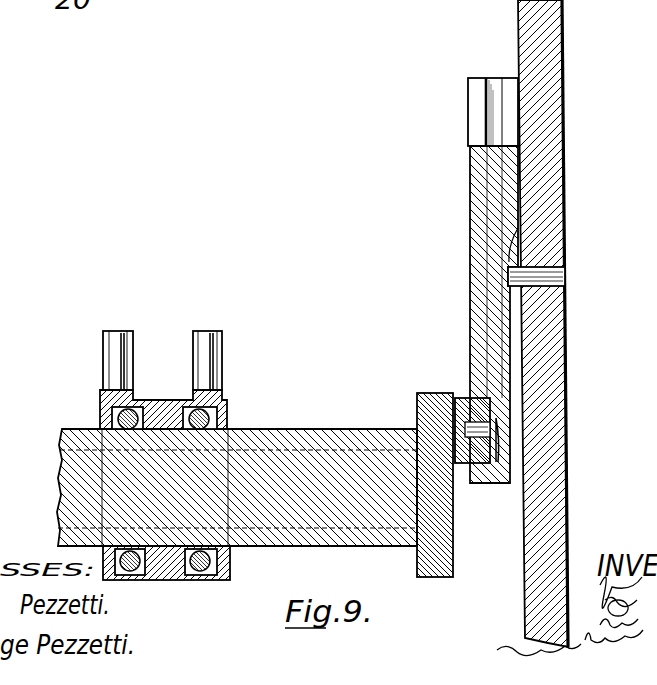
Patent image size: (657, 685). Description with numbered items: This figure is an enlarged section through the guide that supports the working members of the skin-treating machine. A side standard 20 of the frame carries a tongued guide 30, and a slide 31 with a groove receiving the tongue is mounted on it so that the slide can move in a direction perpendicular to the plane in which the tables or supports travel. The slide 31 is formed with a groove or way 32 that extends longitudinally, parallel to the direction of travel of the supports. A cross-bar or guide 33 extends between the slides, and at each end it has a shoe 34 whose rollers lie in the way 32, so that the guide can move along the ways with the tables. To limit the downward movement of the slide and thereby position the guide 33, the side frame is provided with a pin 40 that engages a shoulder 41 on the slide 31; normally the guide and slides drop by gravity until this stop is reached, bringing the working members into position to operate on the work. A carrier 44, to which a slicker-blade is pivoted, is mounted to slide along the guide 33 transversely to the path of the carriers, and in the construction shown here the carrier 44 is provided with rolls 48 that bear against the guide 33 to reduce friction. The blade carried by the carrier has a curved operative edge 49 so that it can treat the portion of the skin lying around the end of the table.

The side standard 20 is at (565, 413).
The tongued guide 30 is at (485, 110).
The slide 31 is at (483, 195).
The groove or way 32 is at (497, 485).
The cross-bar or guide 33 is at (325, 430).
The shoe 34 is at (430, 578).
The pin 40 is at (545, 278).
The shoulder 41 is at (523, 228).
The carrier 44 is at (225, 415).
The roll 48 is at (185, 408).
The curved operative edge 49 is at (104, 345).